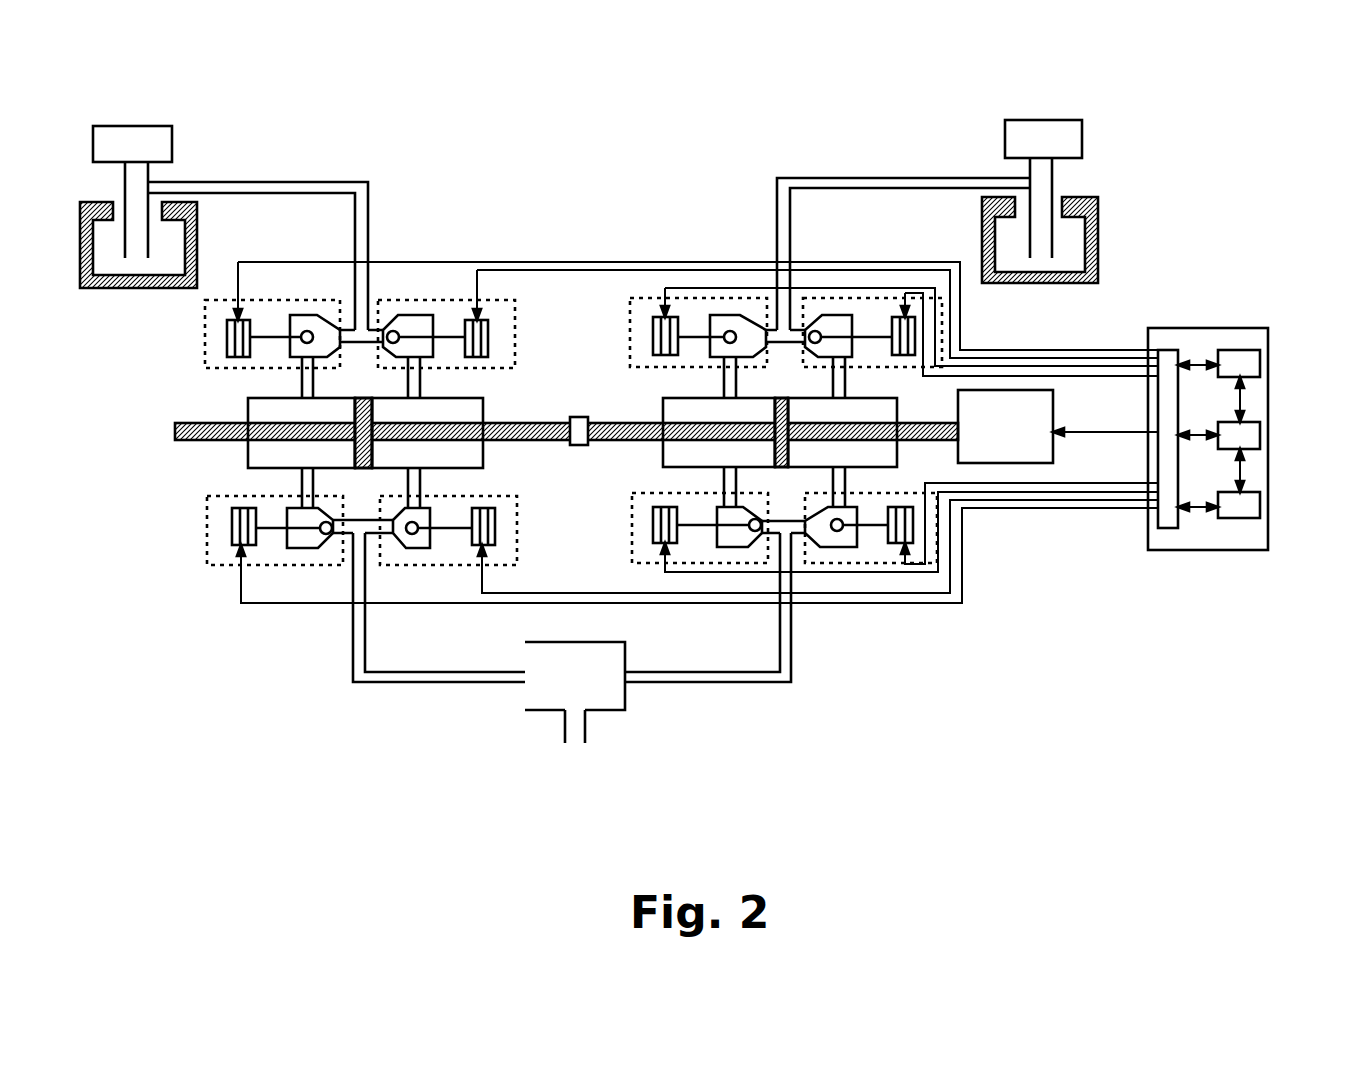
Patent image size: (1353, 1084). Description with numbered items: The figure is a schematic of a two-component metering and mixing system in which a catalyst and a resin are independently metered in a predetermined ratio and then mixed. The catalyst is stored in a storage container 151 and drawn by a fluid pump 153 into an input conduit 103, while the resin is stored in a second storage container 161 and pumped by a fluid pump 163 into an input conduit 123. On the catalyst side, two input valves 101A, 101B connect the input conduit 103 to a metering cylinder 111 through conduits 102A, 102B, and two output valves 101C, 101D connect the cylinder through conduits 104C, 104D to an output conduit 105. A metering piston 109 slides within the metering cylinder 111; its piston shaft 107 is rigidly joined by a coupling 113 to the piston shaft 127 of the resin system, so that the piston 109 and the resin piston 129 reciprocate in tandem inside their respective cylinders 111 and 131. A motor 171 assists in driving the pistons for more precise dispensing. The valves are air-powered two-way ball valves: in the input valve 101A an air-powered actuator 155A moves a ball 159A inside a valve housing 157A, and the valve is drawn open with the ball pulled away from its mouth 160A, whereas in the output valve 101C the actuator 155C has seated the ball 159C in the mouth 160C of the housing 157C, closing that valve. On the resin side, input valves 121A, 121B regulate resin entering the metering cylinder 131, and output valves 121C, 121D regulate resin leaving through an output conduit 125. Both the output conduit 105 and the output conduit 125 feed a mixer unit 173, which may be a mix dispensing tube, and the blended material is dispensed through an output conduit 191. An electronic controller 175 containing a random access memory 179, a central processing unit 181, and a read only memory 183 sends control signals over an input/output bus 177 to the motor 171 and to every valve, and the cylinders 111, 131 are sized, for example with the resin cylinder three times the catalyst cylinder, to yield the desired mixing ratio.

The input valve 101A is at (205, 337).
The input valve 101B is at (517, 350).
The output valve 101C is at (207, 540).
The output valve 101D is at (517, 540).
The conduit 102A is at (300, 390).
The conduit 102B is at (420, 377).
The input conduit 103 is at (368, 188).
The conduit 104C is at (300, 483).
The conduit 104D is at (420, 483).
The output conduit 105 is at (352, 662).
The piston shaft 107 is at (184, 443).
The metering piston 109 is at (360, 398).
The metering cylinder 111 is at (483, 458).
The coupling 113 is at (588, 445).
The input valve 121A is at (632, 298).
The input valve 121B is at (942, 320).
The output valve 121C is at (634, 563).
The output valve 121D is at (940, 533).
The input conduit 123 is at (925, 177).
The output conduit 125 is at (748, 682).
The piston shaft 127 is at (691, 438).
The piston 129 is at (785, 467).
The metering cylinder 131 is at (757, 398).
The storage container 151 is at (112, 289).
The fluid pump 153 is at (138, 125).
The air-powered actuator 155A is at (230, 300).
The air-powered actuator 155C is at (232, 543).
The valve housing 157A is at (305, 315).
The valve housing 157C is at (287, 547).
The ball 159A is at (301, 340).
The ball 159C is at (325, 534).
The mouth 160A is at (335, 333).
The mouth 160C is at (338, 531).
The storage container 161 is at (1098, 245).
The fluid pump 163 is at (1082, 120).
The motor 171 is at (1058, 410).
The mixer unit 173 is at (523, 698).
The electronic controller 175 is at (1187, 328).
The input/output bus 177 is at (1167, 528).
The random access memory 179 is at (1250, 350).
The central processing unit 181 is at (1258, 425).
The read only memory 183 is at (1240, 513).
The output conduit 191 is at (565, 727).